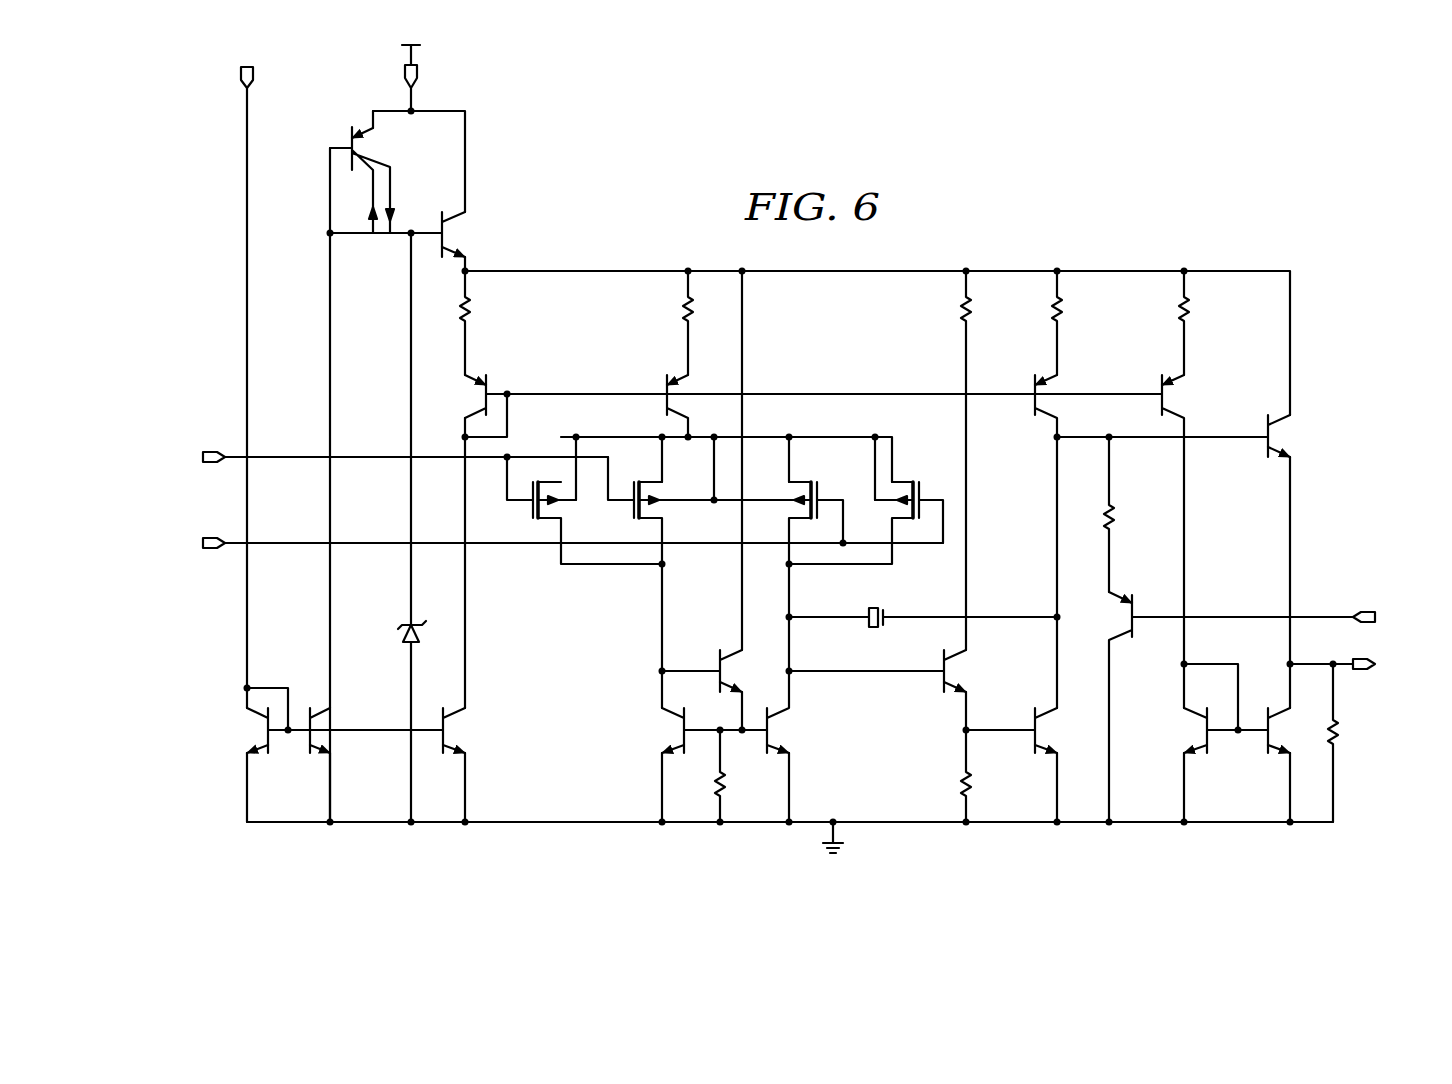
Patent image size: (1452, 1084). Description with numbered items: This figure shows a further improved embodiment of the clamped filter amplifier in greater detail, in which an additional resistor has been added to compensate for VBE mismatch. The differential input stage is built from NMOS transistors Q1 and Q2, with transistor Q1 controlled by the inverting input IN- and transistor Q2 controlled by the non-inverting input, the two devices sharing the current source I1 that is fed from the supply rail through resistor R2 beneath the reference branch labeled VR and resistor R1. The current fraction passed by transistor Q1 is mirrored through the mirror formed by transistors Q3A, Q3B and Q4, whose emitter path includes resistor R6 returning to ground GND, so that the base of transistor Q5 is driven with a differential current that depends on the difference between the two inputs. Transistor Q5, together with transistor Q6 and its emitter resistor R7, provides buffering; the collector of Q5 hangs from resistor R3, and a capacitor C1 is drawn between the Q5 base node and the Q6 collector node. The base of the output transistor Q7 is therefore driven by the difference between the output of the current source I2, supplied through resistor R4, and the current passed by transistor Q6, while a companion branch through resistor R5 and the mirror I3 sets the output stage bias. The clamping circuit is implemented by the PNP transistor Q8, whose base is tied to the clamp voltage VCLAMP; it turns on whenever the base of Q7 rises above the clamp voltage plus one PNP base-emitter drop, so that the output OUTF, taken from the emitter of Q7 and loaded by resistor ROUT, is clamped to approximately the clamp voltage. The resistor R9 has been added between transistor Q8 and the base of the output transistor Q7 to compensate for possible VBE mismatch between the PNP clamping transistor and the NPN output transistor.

The voltage reference transistor VR is at (468, 225).
The resistor R1 is at (479, 323).
The resistor R2 is at (702, 323).
The current source I1 is at (689, 387).
The resistor R3 is at (980, 460).
The resistor R4 is at (1070, 323).
The current source I2 is at (1057, 523).
The resistor R5 is at (1198, 323).
The output transistor Q7 is at (1187, 561).
The NMOS transistor Q1 is at (659, 510).
The NMOS transistor Q2 is at (852, 523).
The inverting input IN- is at (384, 457).
The current mirror transistor Q3B is at (720, 647).
The current mirror transistor Q3A is at (698, 765).
The current mirror transistor Q4 is at (792, 693).
The resistor R6 is at (734, 776).
The ground GND is at (834, 852).
The compensation capacitor C1 is at (923, 604).
The buffer transistor Q5 is at (890, 690).
The resistor R7 is at (980, 776).
The buffer transistor Q6 is at (1024, 765).
The resistor R9 is at (1123, 514).
The clamping transistor Q8 is at (1219, 707).
The clamp voltage VCLAMP is at (1400, 621).
The current mirror I3 is at (1237, 743).
The filter amplifier output OUTF is at (1359, 668).
The output resistor R_OUT ROUT is at (1361, 743).